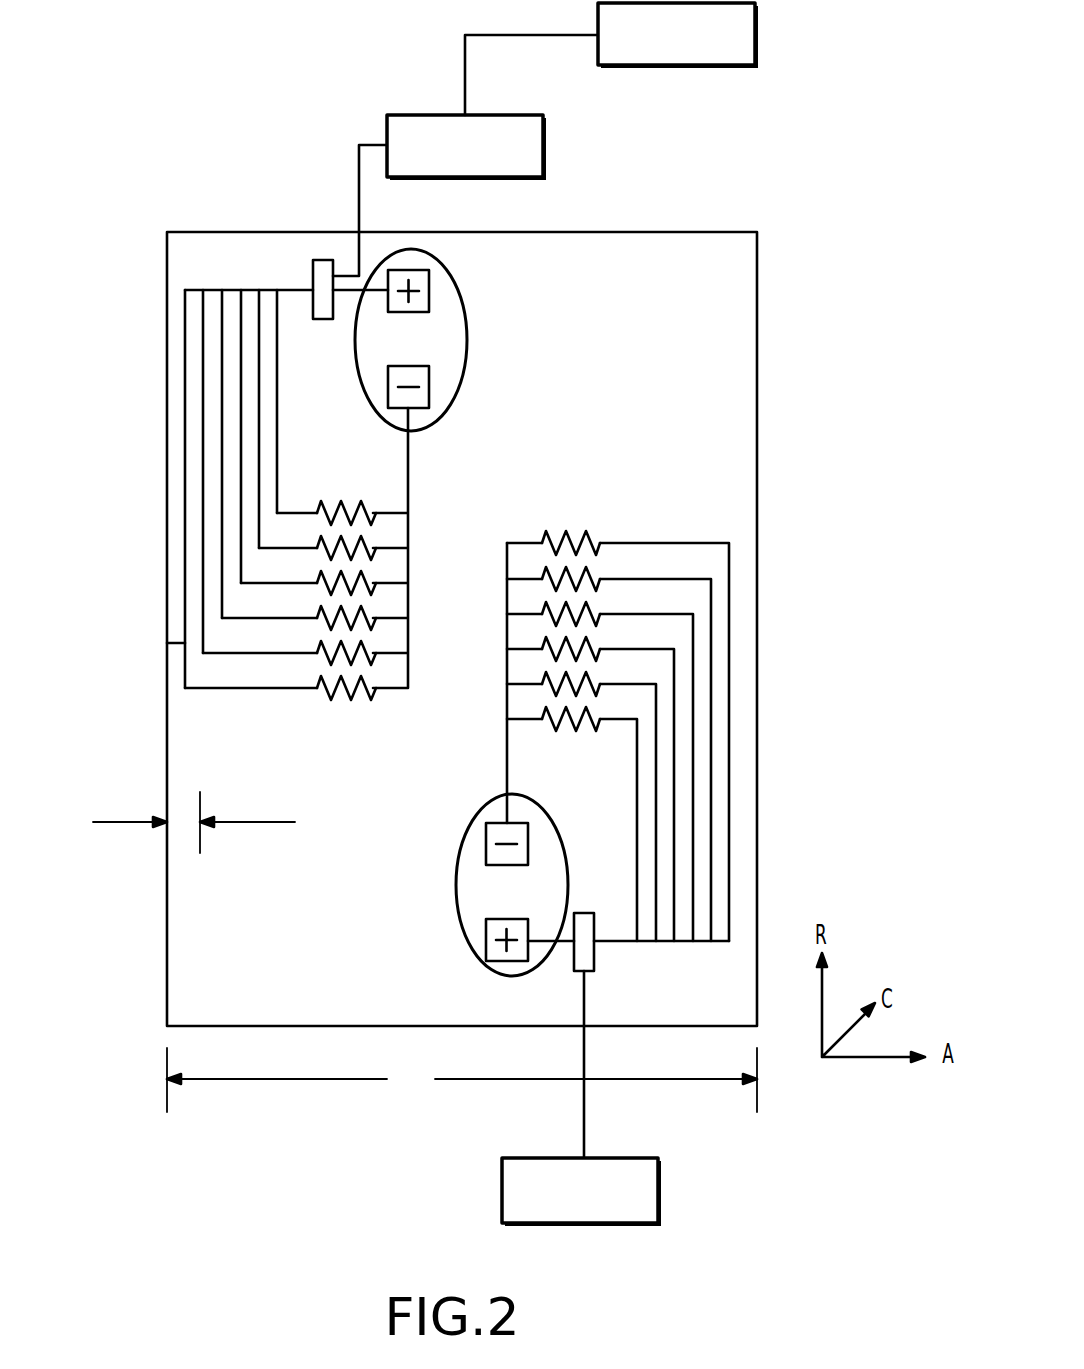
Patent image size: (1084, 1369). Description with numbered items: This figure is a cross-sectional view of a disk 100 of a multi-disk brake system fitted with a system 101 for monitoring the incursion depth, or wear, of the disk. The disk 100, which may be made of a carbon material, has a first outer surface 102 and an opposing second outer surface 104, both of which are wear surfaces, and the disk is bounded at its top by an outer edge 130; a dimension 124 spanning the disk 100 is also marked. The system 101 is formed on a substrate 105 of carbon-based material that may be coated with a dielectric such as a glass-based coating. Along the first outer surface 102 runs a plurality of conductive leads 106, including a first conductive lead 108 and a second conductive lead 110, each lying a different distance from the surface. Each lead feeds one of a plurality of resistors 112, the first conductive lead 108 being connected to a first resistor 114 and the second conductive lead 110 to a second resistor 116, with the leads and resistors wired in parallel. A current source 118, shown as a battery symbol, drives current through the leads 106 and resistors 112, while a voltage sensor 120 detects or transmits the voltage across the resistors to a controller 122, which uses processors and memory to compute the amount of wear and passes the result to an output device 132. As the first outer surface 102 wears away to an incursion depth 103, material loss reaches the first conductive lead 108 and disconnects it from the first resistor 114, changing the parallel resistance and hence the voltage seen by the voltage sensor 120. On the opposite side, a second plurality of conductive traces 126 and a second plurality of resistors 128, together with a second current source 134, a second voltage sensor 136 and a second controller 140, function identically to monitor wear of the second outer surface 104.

The disk 100 is at (152, 195).
The system for monitoring incursion depth 101 is at (163, 118).
The first outer surface 102 is at (167, 935).
The incursion depth 103 is at (245, 822).
The second outer surface 104 is at (757, 370).
The substrate 105 is at (727, 296).
The plurality of conductive leads 106 is at (183, 342).
The first conductive lead 108 is at (185, 643).
The second conductive lead 110 is at (232, 653).
The plurality of resistors 112 is at (372, 703).
The first resistor 114 is at (350, 698).
The second resistor 116 is at (358, 645).
The current source 118 is at (467, 355).
The voltage sensor 120 is at (323, 260).
The controller 122 is at (543, 147).
The width 124 is at (462, 1080).
The second plurality of conductive traces 126 is at (710, 540).
The second plurality of resistors 128 is at (586, 532).
The outer edge 130 is at (730, 232).
The output device 132 is at (663, 50).
The second current source 134 is at (456, 915).
The second voltage sensor 136 is at (594, 953).
The second controller 140 is at (658, 1190).